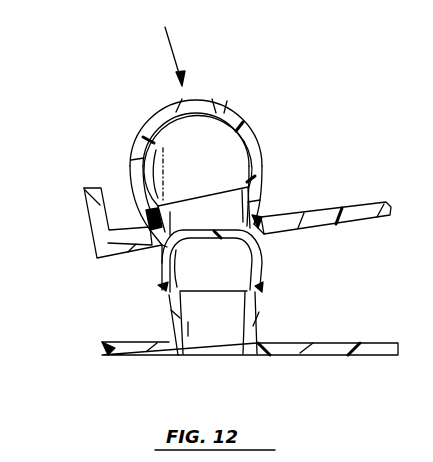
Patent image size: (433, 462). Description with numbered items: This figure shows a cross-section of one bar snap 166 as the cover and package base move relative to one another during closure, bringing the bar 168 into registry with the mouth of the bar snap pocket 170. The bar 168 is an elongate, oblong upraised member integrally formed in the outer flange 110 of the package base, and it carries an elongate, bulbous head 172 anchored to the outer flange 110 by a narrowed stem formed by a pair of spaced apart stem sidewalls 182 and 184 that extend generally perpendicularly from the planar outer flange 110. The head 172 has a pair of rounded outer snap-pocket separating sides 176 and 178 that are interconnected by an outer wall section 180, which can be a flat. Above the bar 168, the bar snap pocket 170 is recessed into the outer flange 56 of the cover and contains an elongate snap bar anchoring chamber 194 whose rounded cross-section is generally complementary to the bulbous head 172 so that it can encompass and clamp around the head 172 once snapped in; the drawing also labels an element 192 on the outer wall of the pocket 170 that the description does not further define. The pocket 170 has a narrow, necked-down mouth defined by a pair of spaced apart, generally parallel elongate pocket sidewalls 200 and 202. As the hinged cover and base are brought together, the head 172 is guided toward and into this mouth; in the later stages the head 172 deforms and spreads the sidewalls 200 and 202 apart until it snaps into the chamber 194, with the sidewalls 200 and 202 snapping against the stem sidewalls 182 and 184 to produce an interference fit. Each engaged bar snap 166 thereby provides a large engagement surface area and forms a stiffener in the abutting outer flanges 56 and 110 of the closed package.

The bar snap 166 is at (126, 149).
The outer ring 192 is at (241, 58).
The bar snap pocket 170 is at (322, 52).
The snap bar anchoring chamber 194 is at (210, 155).
The outer wall section 180 is at (218, 198).
The head 172 is at (215, 230).
The outer flange 56 is at (368, 201).
The pocket sidewall 202 is at (263, 208).
The pocket sidewall 200 is at (108, 230).
The snap-pocket separating side 178 is at (160, 264).
The bar 168 is at (278, 270).
The snap-pocket separating side 176 is at (263, 282).
The stem sidewall 182 is at (257, 317).
The stem sidewall 184 is at (175, 315).
The outer flange 110 is at (372, 312).